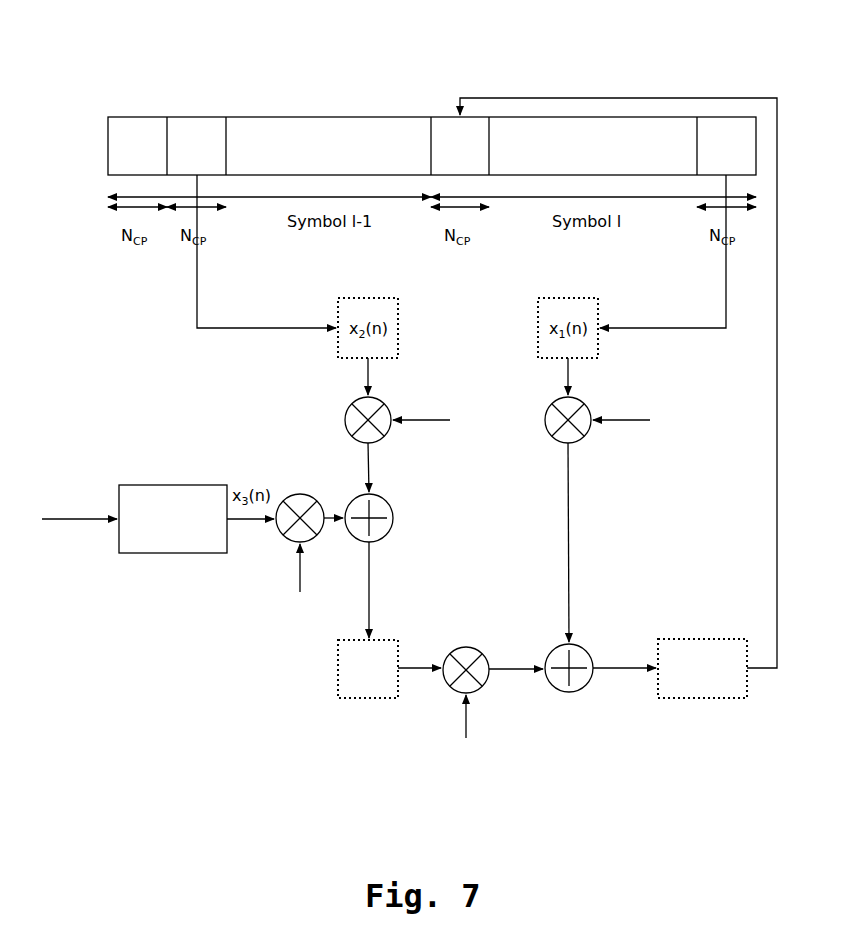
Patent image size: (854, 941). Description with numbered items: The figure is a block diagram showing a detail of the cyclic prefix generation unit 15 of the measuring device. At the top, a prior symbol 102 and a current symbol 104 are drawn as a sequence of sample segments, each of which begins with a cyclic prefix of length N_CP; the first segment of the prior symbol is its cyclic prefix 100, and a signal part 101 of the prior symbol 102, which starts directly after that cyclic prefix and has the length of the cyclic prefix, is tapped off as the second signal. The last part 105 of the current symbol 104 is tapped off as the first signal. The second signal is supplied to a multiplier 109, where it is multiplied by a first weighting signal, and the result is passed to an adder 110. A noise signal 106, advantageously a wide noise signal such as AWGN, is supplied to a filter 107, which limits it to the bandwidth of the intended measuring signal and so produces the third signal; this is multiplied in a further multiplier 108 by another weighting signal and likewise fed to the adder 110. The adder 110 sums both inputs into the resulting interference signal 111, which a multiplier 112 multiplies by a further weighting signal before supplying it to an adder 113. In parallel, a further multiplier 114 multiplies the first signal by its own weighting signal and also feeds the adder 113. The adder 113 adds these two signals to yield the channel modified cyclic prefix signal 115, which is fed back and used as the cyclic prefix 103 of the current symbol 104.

The cyclic prefix generation unit 15 is at (112, 326).
The cyclic prefix of symbol l-1 100 is at (129, 116).
The signal part of a prior symbol 101 is at (197, 116).
The prior symbol 102 is at (288, 77).
The cyclic prefix of the current symbol 103 is at (468, 116).
The current symbol 104 is at (608, 76).
The last part of the current symbol 105 is at (726, 116).
The noise signal 106 is at (72, 517).
The filter 107 is at (147, 484).
The multiplier 108 is at (287, 500).
The multiplier 109 is at (348, 410).
The adder 110 is at (385, 497).
The resulting signal 111 is at (344, 637).
The multiplier 112 is at (451, 645).
The adder 113 is at (557, 642).
The multiplier 114 is at (544, 415).
The channel modified cyclic prefix signal 115 is at (697, 637).